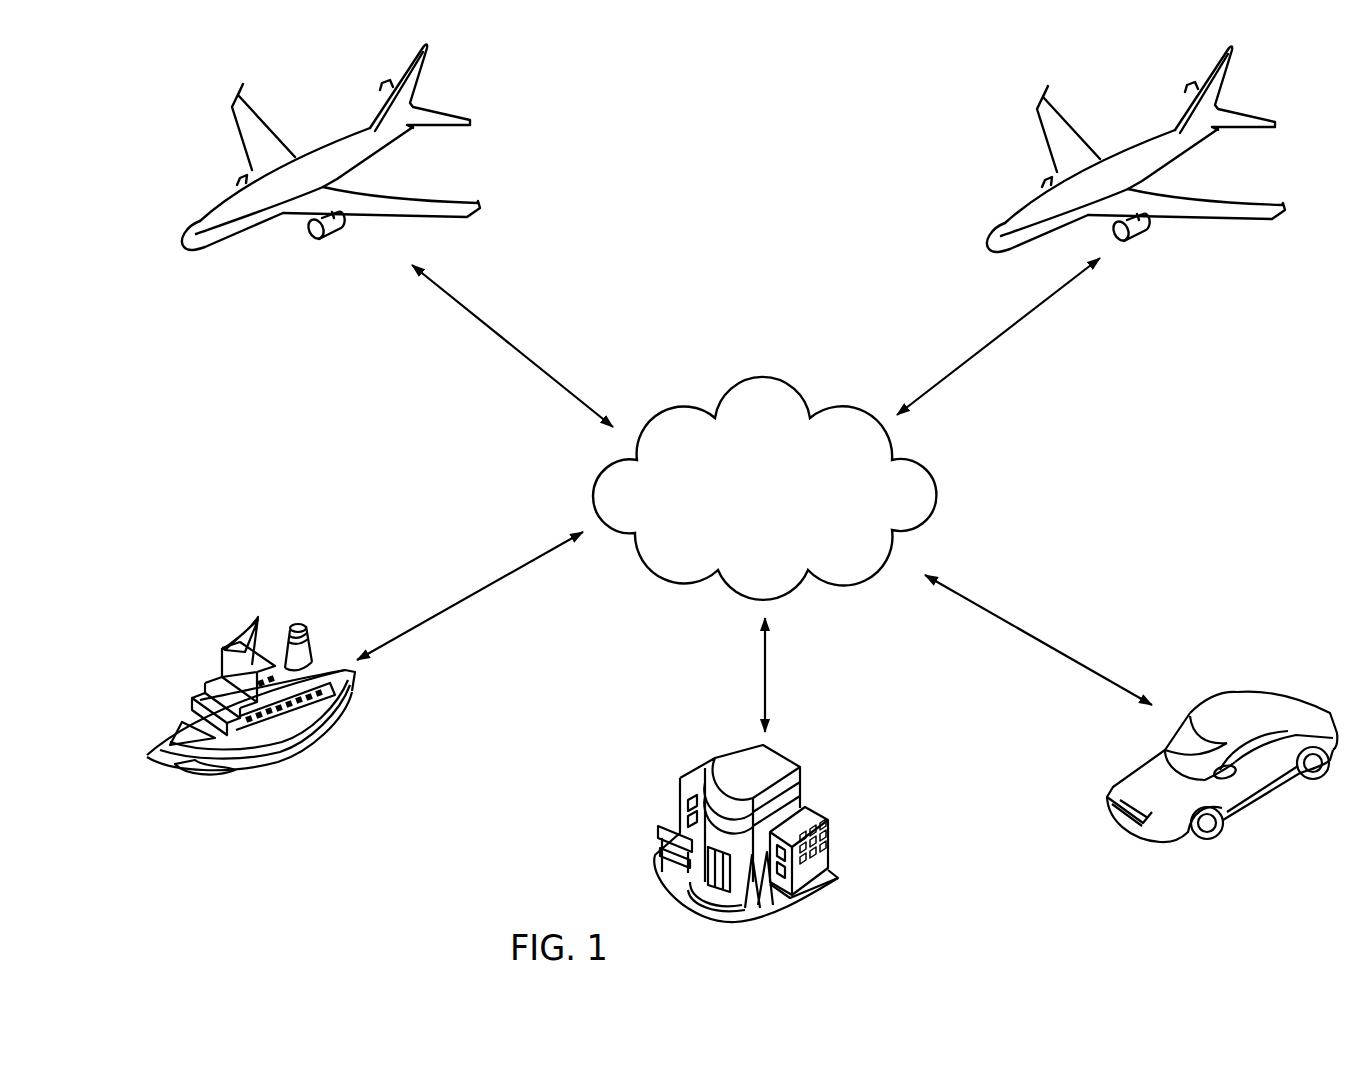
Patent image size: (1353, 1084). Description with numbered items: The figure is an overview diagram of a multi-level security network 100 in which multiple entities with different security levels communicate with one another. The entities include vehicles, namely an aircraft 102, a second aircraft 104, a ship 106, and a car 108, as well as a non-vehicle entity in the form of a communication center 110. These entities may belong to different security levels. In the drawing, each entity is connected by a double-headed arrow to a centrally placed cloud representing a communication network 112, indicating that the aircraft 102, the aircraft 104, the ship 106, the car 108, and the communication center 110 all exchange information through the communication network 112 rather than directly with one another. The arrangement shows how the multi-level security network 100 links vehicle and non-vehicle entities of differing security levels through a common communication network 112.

The multi-level security network 100 is at (128, 138).
The aircraft 102 is at (240, 253).
The aircraft 104 is at (1163, 217).
The ship 106 is at (283, 760).
The car 108 is at (1247, 807).
The communication center 110 is at (832, 828).
The communication network 112 is at (788, 515).